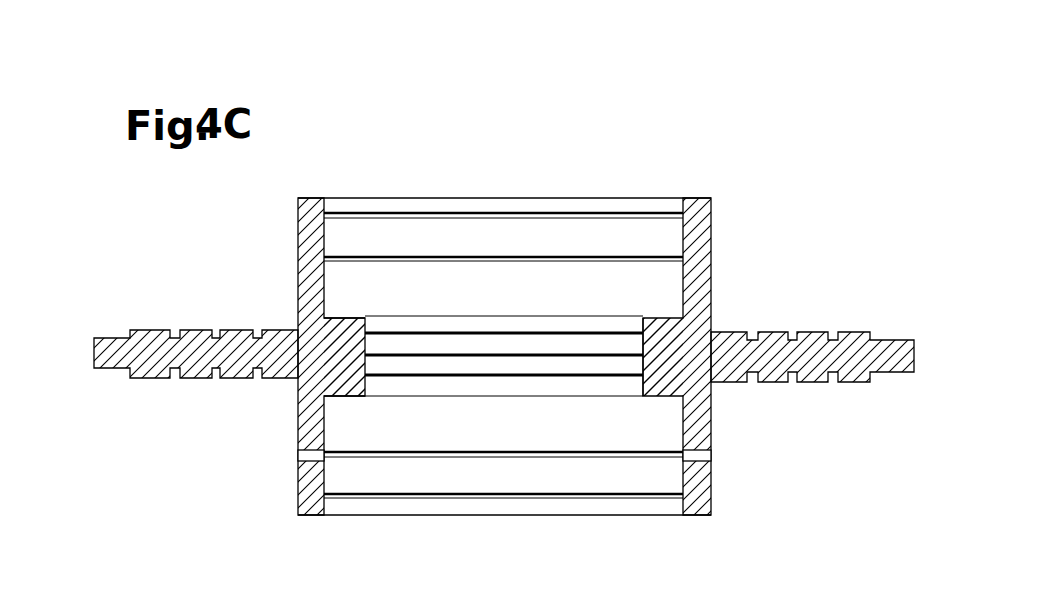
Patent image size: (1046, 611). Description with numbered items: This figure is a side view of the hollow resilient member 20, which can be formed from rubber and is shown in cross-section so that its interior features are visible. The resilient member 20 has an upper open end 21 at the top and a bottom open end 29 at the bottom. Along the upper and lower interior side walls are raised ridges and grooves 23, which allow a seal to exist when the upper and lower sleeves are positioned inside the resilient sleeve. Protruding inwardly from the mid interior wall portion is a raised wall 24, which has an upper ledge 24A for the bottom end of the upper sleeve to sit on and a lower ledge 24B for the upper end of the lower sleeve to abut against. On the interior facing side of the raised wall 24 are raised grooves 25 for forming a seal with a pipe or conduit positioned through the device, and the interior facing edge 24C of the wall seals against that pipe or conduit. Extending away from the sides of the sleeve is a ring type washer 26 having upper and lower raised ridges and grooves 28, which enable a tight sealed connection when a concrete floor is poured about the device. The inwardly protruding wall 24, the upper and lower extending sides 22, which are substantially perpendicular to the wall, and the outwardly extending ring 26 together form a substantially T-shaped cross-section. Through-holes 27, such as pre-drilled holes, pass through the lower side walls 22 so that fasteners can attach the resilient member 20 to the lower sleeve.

The resilient member 20 is at (499, 70).
The upper open end 21 is at (676, 206).
The upper and lower extending sides 22 is at (298, 240).
The raised ridges and grooves 23 is at (640, 226).
The raised wall 24 is at (345, 335).
The upper ledge 24A is at (333, 312).
The lower ledge 24B is at (340, 396).
The interior facing edge 24C is at (622, 332).
The raised grooves 25 is at (465, 357).
The ring type washer 26 is at (119, 347).
The through-holes 27 is at (303, 452).
The upper and lower raised ridges and grooves 28 is at (256, 328).
The bottom open end 29 is at (683, 510).